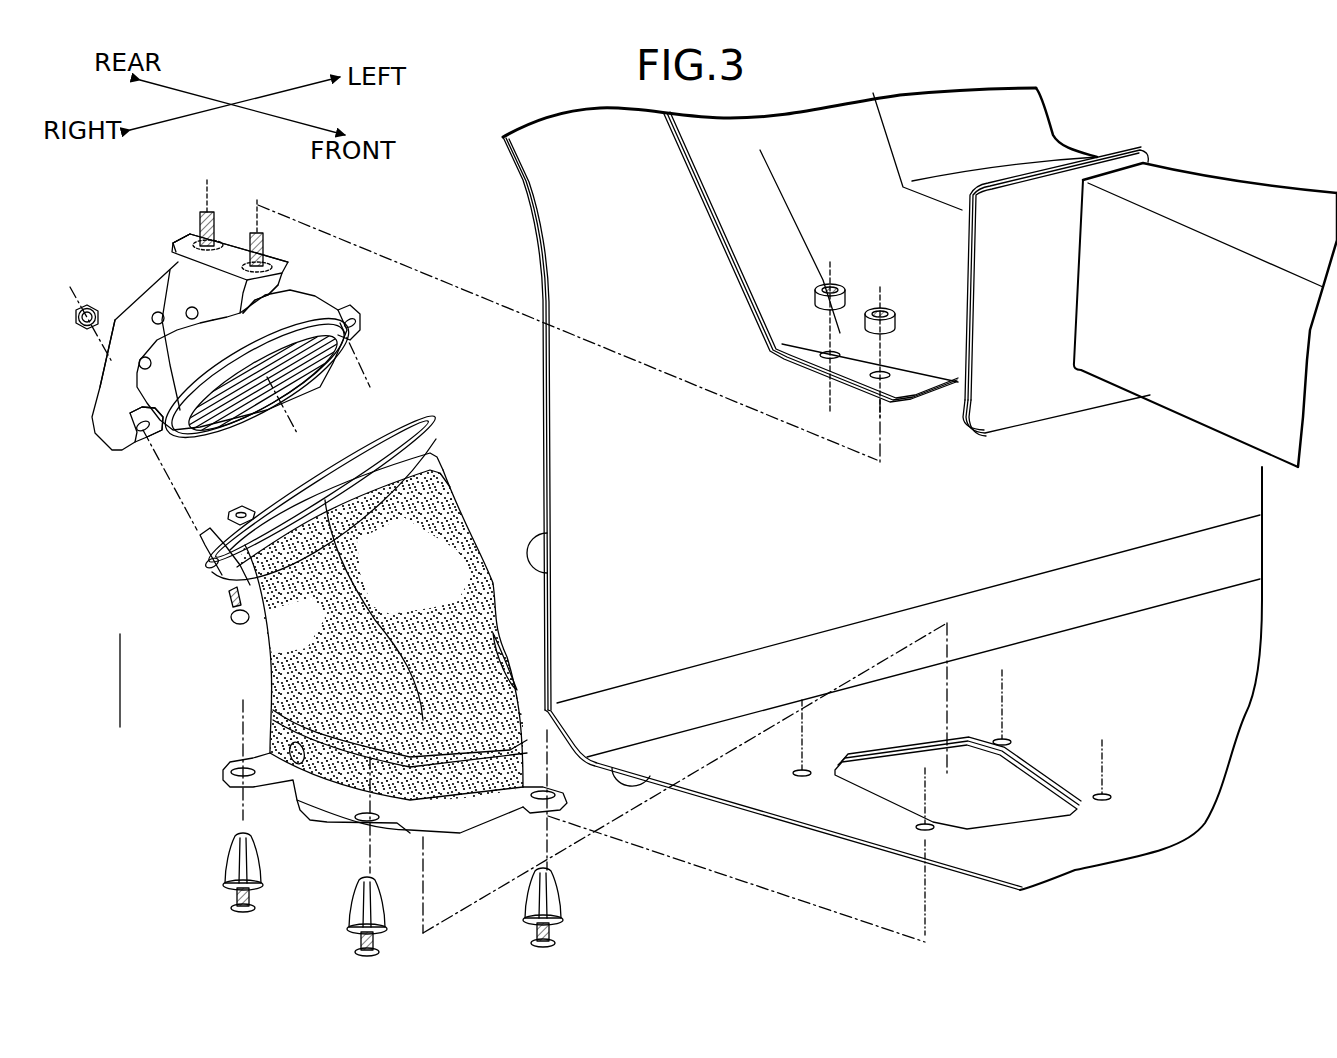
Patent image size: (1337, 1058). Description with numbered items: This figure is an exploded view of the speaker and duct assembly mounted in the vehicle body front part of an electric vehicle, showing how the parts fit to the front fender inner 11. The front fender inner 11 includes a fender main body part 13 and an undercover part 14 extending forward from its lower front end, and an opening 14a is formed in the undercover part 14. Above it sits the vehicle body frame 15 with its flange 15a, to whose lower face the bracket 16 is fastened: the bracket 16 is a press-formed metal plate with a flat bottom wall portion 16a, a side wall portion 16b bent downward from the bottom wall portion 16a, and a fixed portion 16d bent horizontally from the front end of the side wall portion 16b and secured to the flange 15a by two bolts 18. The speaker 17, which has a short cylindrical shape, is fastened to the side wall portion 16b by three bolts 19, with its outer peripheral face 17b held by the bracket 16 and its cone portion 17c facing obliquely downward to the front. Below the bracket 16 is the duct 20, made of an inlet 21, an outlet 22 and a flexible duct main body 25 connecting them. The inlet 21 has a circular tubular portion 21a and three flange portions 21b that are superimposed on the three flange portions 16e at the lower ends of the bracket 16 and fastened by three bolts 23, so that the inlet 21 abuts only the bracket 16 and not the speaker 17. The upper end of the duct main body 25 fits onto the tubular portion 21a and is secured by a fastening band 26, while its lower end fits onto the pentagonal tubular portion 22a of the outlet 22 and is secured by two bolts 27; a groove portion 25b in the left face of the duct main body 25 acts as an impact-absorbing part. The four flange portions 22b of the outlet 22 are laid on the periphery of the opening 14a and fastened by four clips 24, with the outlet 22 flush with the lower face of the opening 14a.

The front fender inner 11 is at (647, 550).
The fender main body part 13 is at (543, 567).
The undercover part 14 is at (612, 768).
The opening 14a is at (1032, 813).
The vehicle body frame 15 is at (1053, 117).
The flange 15a is at (913, 383).
The bracket 16 is at (173, 238).
The bottom wall portion 16a is at (128, 313).
The side wall portion 16b is at (127, 337).
The fixed portion 16d is at (283, 253).
The flange portions 16e is at (147, 437).
The speaker 17 is at (333, 293).
The outer peripheral face 17b is at (270, 287).
The cone portion 17c is at (167, 410).
The bolts 18 is at (257, 232).
The bolts 19 is at (145, 357).
The duct 20 is at (125, 632).
The inlet 21 is at (200, 587).
The tubular portion 21a is at (420, 472).
The flange portions 21b is at (195, 535).
The outlet 22 is at (245, 760).
The tubular portion 22a is at (391, 845).
The flange portions 22b is at (260, 785).
The bolts 23 is at (247, 620).
The clips 24 is at (347, 940).
The duct main body 25 is at (260, 663).
The groove portion 25b is at (500, 657).
The fastening band 26 is at (403, 433).
The bolts 27 is at (300, 743).